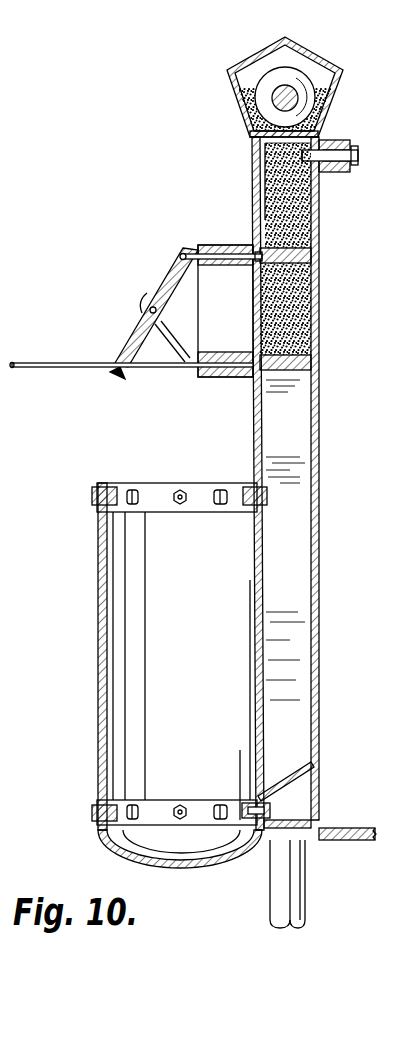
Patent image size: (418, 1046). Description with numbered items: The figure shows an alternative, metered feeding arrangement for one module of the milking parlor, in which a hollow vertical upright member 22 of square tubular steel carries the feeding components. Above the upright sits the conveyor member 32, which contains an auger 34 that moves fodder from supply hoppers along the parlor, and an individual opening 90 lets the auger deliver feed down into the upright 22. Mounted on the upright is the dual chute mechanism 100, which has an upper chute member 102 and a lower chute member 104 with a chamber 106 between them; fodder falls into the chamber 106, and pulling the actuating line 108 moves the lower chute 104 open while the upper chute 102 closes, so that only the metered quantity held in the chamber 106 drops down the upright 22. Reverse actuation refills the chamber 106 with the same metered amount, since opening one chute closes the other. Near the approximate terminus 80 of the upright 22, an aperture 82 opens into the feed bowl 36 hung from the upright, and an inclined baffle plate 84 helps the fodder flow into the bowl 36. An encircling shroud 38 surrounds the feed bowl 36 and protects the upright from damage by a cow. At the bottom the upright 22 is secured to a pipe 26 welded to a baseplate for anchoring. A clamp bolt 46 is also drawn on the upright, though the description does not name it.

The hollow vertical upright member 22 is at (317, 552).
The pipe 26 is at (300, 898).
The conveyor member 32 is at (323, 66).
The auger 34 is at (278, 90).
The feed bowl 36 is at (113, 848).
The encircling shroud 38 is at (158, 630).
The clamp bolt 46 is at (350, 140).
The terminus 80 is at (300, 754).
The aperture 82 is at (262, 765).
The inclined or baffle plate 84 is at (288, 766).
The individual opening 90 is at (250, 129).
The dual chute mechanism 100 is at (160, 273).
The upper chute member 102 is at (257, 250).
The lower chute member 104 is at (300, 370).
The chamber 106 is at (300, 307).
The actuating line 108 is at (72, 363).